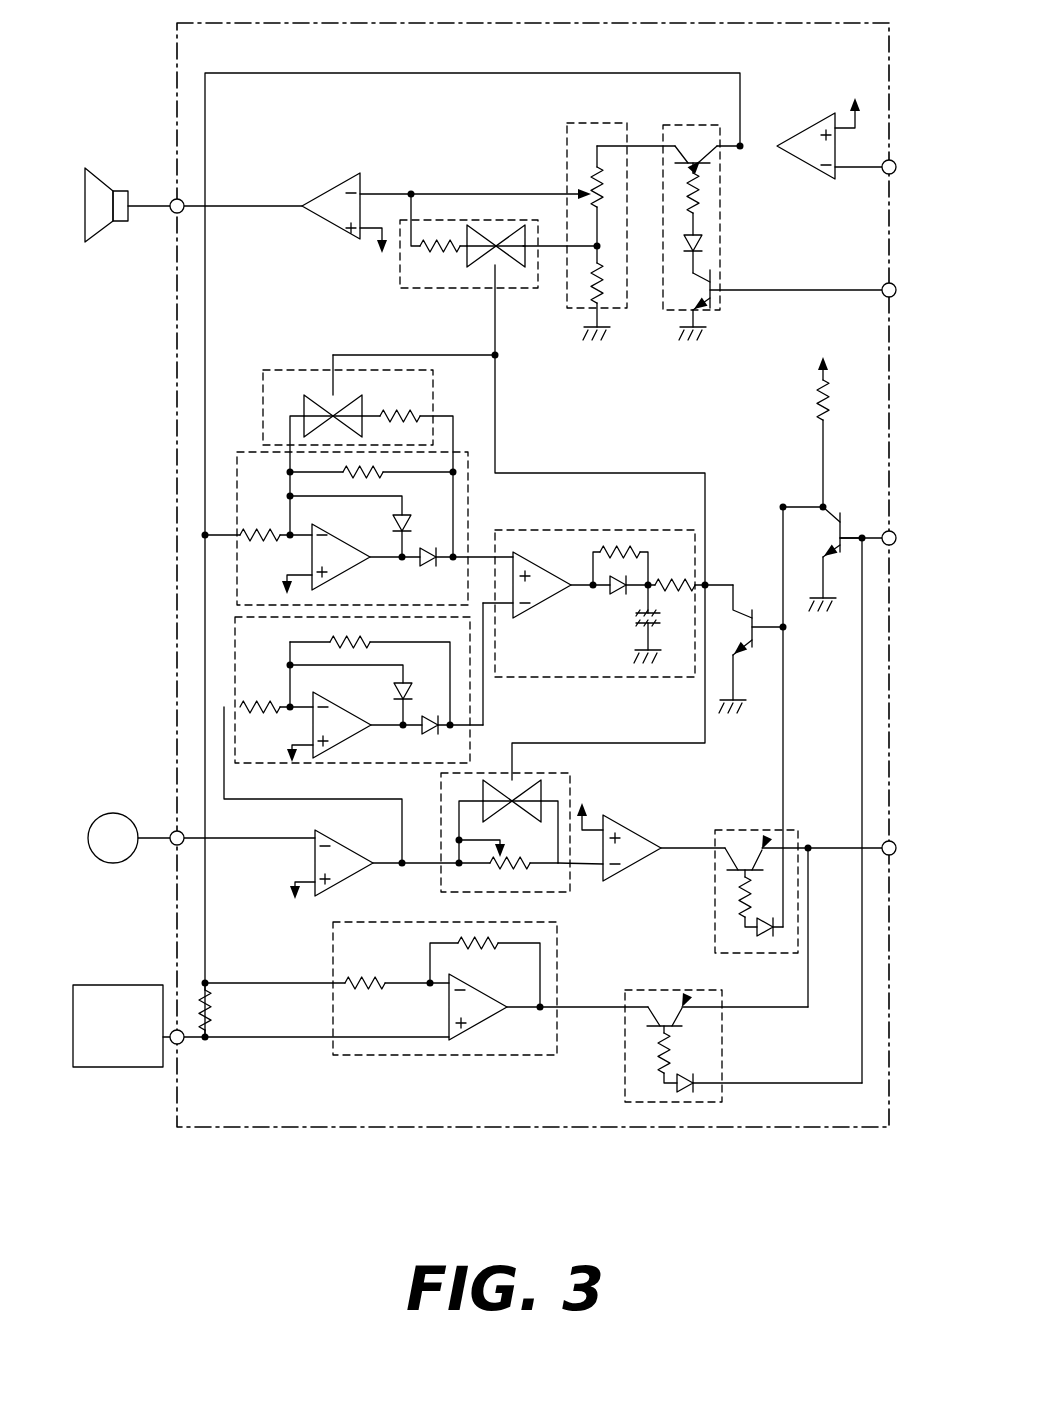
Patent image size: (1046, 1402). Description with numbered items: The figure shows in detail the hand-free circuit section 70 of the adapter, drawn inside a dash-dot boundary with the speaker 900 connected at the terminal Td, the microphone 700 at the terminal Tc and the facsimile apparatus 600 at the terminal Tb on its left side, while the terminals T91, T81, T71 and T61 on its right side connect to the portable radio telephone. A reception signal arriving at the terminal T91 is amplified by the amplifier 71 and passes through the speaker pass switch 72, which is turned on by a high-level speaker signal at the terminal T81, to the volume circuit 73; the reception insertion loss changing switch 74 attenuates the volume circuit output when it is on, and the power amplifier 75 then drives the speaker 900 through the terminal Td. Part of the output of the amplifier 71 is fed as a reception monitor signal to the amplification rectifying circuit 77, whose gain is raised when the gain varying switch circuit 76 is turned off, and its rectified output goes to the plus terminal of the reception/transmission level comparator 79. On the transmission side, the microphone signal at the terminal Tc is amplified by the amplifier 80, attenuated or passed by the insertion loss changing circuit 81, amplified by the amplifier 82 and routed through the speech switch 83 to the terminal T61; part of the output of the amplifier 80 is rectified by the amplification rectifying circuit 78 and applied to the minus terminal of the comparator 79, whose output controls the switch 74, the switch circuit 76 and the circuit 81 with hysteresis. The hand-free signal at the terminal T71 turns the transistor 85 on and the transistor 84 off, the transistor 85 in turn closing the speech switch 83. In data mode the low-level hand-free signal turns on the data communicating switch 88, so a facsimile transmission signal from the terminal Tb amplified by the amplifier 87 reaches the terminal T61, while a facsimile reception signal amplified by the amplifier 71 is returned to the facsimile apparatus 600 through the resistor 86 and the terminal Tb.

The hand-free circuit section 70 is at (336, 1103).
The amplifier 71 is at (794, 132).
The speaker pass switch 72 is at (722, 207).
The volume circuit 73 is at (564, 166).
The reception insertion loss changing switch 74 is at (455, 298).
The power amplifier 75 is at (323, 194).
The gain varying switch circuit 76 is at (300, 368).
The amplification rectifying circuit 77 is at (242, 450).
The amplification rectifying circuit 78 is at (244, 666).
The reception/transmission level comparator 79 is at (604, 530).
The amplifier 80 is at (336, 838).
The insertion loss changing circuit 81 is at (576, 780).
The amplifier 82 is at (632, 840).
The speech switch 83 is at (744, 828).
The transistor 84 is at (741, 612).
The transistor 85 is at (847, 522).
The resistor 86 is at (214, 1013).
The amplifier 87 is at (561, 947).
The data communicating switch 88 is at (676, 990).
The facsimile apparatus 600 is at (111, 983).
The microphone 700 is at (109, 812).
The speaker 900 is at (106, 182).
The terminal Td is at (170, 212).
The terminal Tc is at (170, 840).
The terminal Tb is at (184, 1044).
The terminal T91 is at (896, 168).
The terminal T81 is at (896, 291).
The terminal T71 is at (896, 539).
The terminal T61 is at (896, 849).